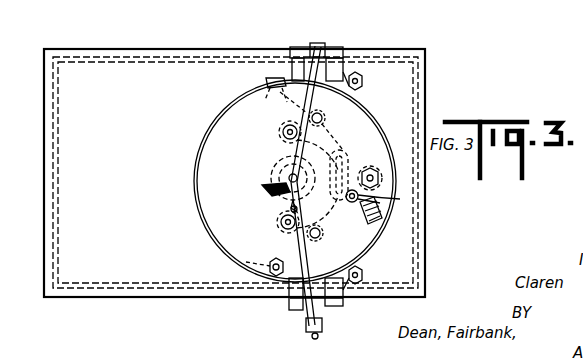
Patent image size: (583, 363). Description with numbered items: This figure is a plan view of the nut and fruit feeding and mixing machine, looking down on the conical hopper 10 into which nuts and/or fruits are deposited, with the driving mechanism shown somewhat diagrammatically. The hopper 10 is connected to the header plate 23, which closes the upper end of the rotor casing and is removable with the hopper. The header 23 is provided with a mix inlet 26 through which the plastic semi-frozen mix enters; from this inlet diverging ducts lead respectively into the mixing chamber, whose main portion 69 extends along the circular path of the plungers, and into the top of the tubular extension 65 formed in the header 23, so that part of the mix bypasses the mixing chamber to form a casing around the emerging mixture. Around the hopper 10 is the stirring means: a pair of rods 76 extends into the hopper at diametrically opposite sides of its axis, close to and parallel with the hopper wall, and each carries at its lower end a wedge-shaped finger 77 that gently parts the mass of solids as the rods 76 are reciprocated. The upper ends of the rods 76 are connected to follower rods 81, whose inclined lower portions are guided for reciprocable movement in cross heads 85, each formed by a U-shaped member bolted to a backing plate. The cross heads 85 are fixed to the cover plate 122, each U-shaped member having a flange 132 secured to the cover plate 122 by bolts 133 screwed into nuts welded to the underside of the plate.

The conical hopper 10 is at (194, 162).
The header plate 23 is at (353, 142).
The mix inlet 26 is at (400, 199).
The tubular extension 65 is at (371, 224).
The main portion of the mixing chamber 69 is at (356, 160).
The rods 76 is at (302, 113).
The fingers 77 is at (266, 186).
The follower rods 81 is at (317, 43).
The cross heads 85 is at (338, 50).
The cover plate 122 is at (383, 70).
The flange 132 is at (250, 89).
The bolts 133 is at (356, 76).